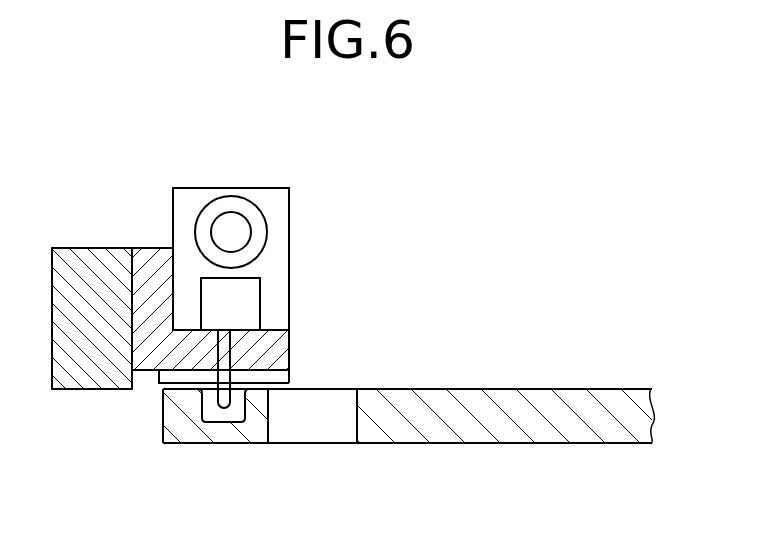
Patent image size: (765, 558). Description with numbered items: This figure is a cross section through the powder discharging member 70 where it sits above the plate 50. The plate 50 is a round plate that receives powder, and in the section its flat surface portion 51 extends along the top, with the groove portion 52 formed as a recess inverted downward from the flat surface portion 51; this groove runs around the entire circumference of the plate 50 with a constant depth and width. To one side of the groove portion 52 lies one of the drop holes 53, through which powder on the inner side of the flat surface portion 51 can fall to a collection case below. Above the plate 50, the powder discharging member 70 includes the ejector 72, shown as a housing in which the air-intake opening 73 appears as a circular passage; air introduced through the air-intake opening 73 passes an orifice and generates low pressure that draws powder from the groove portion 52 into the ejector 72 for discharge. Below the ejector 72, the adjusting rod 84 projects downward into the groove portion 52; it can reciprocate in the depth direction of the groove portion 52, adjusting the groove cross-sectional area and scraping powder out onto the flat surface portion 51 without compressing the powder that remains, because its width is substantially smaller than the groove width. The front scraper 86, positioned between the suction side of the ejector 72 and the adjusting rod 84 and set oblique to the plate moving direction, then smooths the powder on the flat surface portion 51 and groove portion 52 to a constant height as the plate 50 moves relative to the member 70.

The powder discharging member 70 is at (203, 311).
The ejector 72 is at (277, 260).
The air-intake opening 73 is at (231, 223).
The adjusting rod 84 is at (228, 364).
The front scraper 86 is at (277, 390).
The plate 50 is at (473, 398).
The flat surface portion 51 is at (158, 378).
The groove portion 52 is at (221, 412).
The drop hole 53 is at (269, 412).